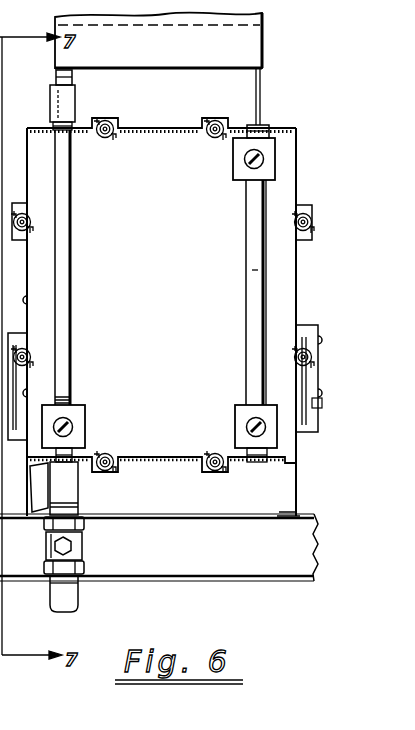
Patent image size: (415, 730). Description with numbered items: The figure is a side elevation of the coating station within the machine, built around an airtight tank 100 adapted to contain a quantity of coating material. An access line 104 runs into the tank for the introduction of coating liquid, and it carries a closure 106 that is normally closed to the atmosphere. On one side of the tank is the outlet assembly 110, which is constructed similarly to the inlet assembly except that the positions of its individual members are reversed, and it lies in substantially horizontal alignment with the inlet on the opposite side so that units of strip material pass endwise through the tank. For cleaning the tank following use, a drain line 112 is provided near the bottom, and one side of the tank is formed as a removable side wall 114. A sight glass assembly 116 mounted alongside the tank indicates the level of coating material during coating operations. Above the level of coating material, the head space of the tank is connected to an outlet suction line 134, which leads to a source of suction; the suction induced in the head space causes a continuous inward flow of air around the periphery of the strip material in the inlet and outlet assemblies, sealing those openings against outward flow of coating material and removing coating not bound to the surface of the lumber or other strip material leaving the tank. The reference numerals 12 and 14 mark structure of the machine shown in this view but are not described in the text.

The channel beam 12 is at (190, 556).
The frame member 14 is at (13, 189).
The airtight tank 100 is at (281, 126).
The access line 104 is at (65, 232).
The closure 106 is at (70, 78).
The outlet assembly 110 is at (308, 412).
The drain line 112 is at (48, 598).
The removable side wall 114 is at (165, 323).
The sight glass assembly 116 is at (255, 240).
The outlet suction line 134 is at (262, 15).